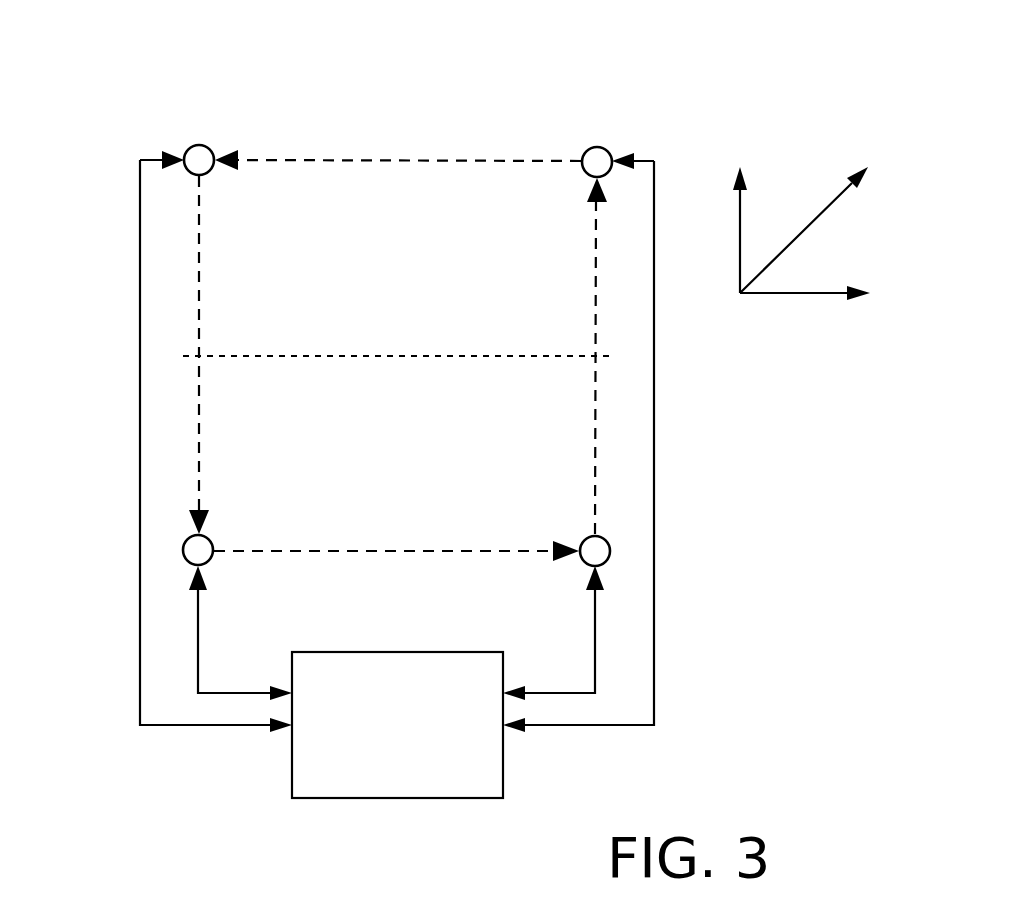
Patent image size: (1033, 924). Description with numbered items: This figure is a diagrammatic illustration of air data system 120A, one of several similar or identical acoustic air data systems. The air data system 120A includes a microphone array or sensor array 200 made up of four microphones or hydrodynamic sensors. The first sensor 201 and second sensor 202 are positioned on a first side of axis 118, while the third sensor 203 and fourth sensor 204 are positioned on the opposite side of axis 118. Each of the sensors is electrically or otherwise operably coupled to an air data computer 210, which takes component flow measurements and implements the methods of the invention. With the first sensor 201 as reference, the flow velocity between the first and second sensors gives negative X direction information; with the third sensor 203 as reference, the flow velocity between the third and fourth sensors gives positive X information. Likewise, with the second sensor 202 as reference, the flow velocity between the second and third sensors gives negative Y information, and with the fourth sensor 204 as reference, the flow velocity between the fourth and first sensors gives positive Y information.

The sensor array 200 is at (170, 120).
The first sensor 201 is at (594, 147).
The second sensor 202 is at (205, 146).
The third sensor 203 is at (183, 545).
The fourth sensor 204 is at (610, 553).
The axis 118 is at (407, 353).
The air data computer 210 is at (394, 800).
The air data system 120A is at (651, 104).